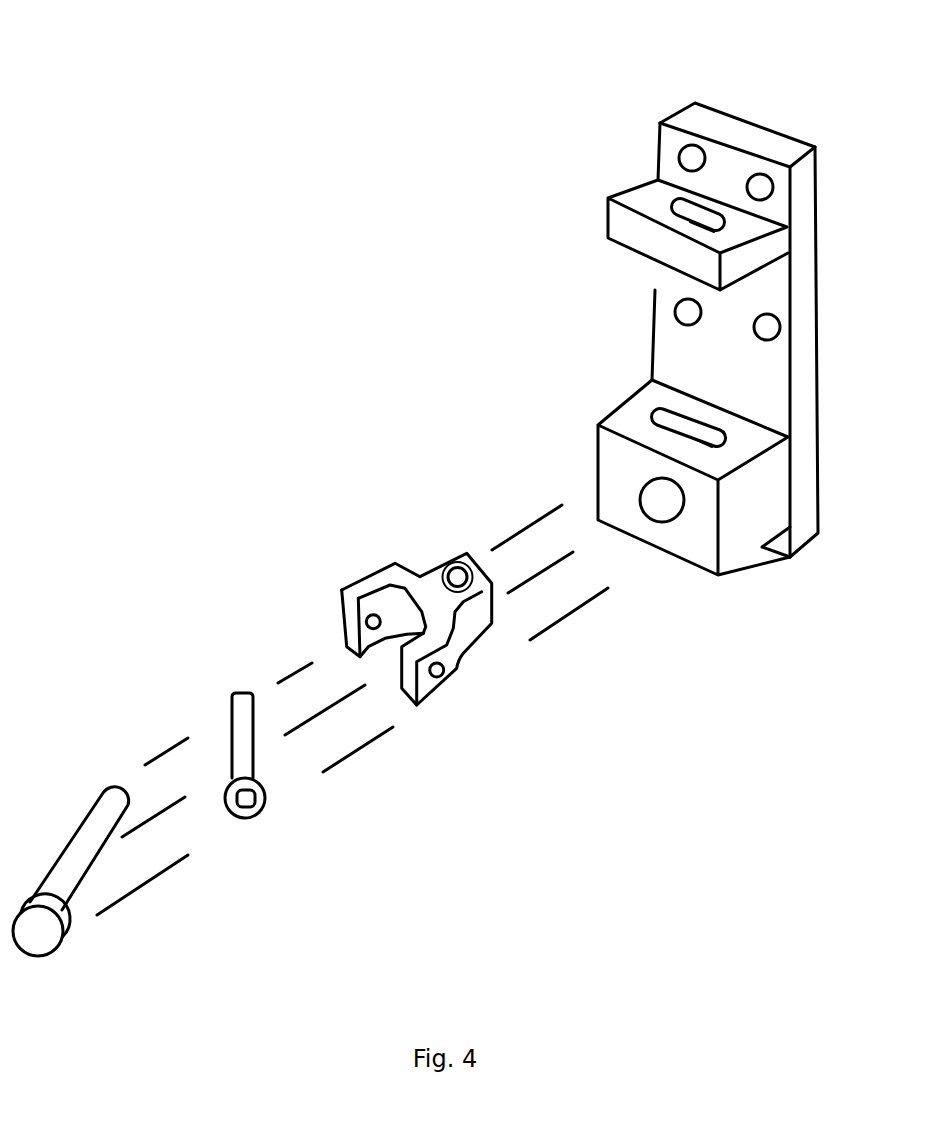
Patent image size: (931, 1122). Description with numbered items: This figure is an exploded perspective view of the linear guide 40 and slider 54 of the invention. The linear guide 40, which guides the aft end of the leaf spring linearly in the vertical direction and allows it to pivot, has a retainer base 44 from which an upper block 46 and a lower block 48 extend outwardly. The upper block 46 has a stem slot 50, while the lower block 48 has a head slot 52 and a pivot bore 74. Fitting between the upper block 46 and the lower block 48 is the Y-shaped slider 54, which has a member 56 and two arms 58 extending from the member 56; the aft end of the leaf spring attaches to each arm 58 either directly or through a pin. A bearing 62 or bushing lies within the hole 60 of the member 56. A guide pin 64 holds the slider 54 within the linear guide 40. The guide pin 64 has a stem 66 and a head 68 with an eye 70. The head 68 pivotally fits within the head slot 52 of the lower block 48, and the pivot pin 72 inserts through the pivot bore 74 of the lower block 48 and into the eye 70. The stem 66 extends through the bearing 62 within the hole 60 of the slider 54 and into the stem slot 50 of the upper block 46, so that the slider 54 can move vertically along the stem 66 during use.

The linear guide 40 is at (802, 310).
The retainer base 44 is at (802, 195).
The upper block 46 is at (648, 195).
The lower block 48 is at (687, 535).
The stem slot 50 is at (690, 208).
The head slot 52 is at (668, 417).
The slider 54 is at (403, 580).
The member 56 is at (470, 622).
The arms 58 is at (455, 742).
The hole 60 is at (467, 556).
The bearing 62 is at (453, 562).
The guide pin 64 is at (242, 735).
The stem 66 is at (237, 700).
The head 68 is at (267, 797).
The eye 70 is at (245, 803).
The pivot pin 72 is at (65, 878).
The pivot bore 74 is at (652, 492).